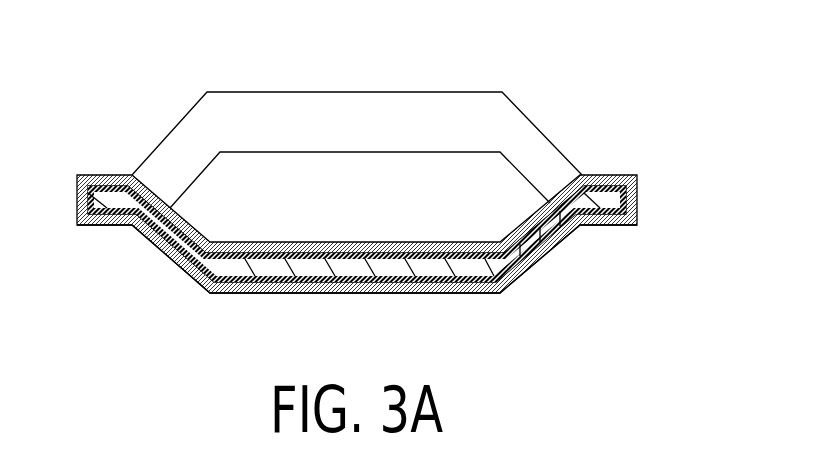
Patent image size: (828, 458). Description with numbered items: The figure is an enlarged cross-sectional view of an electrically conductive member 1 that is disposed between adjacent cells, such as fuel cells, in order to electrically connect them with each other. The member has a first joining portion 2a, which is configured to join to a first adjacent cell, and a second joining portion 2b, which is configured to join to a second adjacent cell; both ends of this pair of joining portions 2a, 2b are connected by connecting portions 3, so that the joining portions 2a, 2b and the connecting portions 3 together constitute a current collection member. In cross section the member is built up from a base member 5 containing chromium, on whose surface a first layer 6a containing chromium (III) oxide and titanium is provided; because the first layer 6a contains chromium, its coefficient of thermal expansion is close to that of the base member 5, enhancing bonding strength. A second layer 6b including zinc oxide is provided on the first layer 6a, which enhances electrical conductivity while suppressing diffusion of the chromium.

The electrically conductive member 1 is at (146, 81).
The first joining portion 2a is at (343, 92).
The second joining portion 2b is at (263, 293).
The connecting portions 3 is at (113, 173).
The base member 5 is at (318, 293).
The first layer 6a is at (387, 293).
The second layer 6b is at (482, 293).